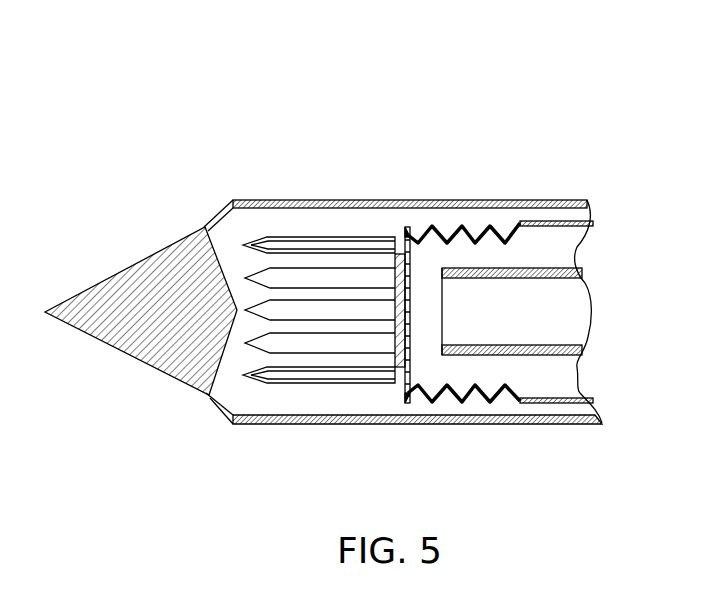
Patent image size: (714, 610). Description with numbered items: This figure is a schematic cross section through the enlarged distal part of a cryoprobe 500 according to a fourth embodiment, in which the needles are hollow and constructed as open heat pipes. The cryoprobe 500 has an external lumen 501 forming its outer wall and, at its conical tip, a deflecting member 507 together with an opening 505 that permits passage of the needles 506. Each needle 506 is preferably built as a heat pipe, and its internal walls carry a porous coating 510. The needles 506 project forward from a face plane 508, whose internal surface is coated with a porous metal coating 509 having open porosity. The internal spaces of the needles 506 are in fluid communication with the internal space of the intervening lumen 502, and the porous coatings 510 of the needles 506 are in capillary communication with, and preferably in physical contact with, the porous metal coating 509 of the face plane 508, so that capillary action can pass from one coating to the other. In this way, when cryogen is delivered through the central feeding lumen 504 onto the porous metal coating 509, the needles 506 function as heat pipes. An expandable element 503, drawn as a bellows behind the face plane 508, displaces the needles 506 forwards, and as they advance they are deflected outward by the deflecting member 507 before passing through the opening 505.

The cryoprobe 500 is at (552, 182).
The external lumen 501 is at (437, 202).
The intervening lumen 502 is at (541, 403).
The expandable element 503 is at (459, 401).
The central feeding lumen 504 is at (548, 270).
The opening 505 is at (216, 211).
The needle 506 is at (302, 381).
The deflecting member 507 is at (135, 267).
The face plane 508 is at (393, 393).
The porous metal coating 509 is at (397, 257).
The porous coating 510 is at (323, 240).